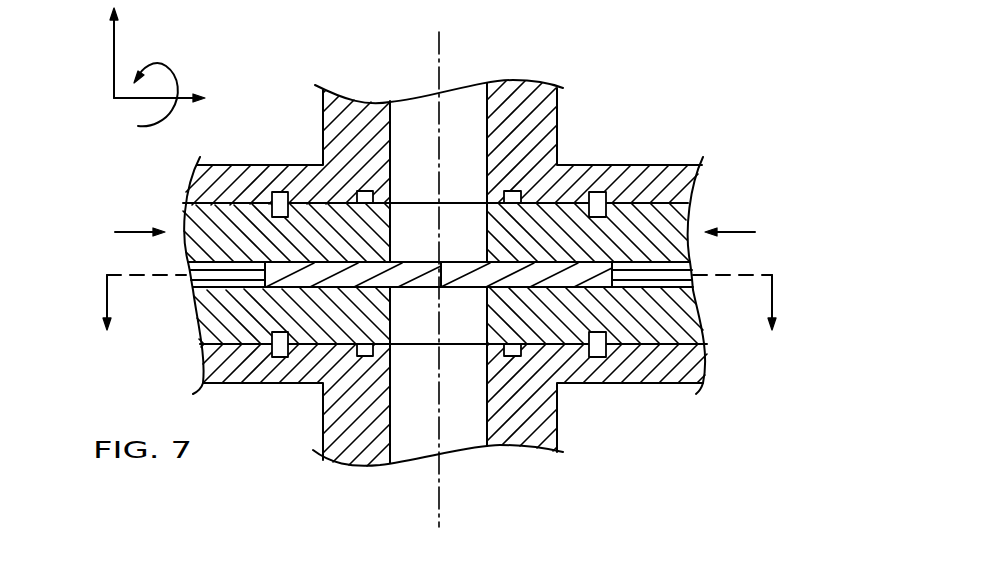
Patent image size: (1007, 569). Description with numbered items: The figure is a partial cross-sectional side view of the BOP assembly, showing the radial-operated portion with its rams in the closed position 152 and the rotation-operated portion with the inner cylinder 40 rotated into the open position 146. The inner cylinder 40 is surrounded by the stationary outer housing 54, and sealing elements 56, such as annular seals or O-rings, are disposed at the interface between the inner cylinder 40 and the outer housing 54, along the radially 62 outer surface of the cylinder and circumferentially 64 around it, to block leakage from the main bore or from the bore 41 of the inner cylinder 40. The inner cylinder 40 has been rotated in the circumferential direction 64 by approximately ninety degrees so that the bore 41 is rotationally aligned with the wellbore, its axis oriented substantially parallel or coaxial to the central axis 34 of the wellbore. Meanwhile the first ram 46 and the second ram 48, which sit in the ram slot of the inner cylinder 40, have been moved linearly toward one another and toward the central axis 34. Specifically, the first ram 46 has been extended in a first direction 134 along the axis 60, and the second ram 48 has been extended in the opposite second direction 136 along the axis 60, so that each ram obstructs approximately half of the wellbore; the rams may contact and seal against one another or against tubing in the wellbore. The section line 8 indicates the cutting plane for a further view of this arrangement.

The section line 8- 8 is at (439, 306).
The central axis 34 is at (440, 48).
The inner cylinder 40 is at (217, 195).
The bore 41 is at (392, 309).
The first ram 46 is at (406, 277).
The second ram 48 is at (470, 277).
The outer housing 54 is at (652, 165).
The sealing elements 56 is at (279, 192).
The axial direction 60 is at (135, 100).
The radial direction 62 is at (112, 60).
The circumferential direction 64 is at (174, 78).
The first direction 134 is at (132, 231).
The second direction 136 is at (734, 231).
The open position 146 is at (419, 352).
The closed position 152 is at (633, 90).